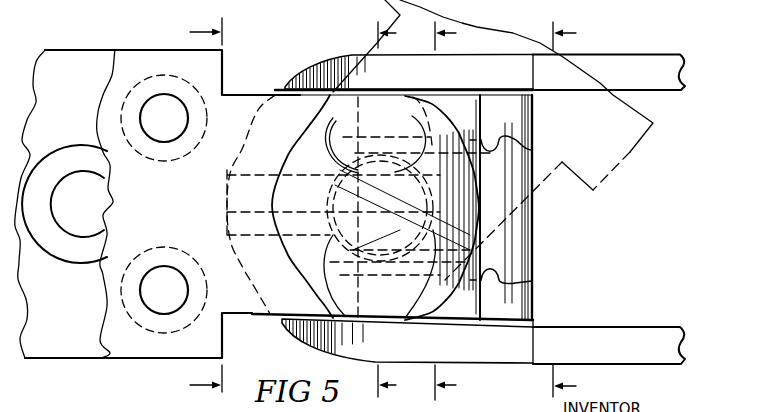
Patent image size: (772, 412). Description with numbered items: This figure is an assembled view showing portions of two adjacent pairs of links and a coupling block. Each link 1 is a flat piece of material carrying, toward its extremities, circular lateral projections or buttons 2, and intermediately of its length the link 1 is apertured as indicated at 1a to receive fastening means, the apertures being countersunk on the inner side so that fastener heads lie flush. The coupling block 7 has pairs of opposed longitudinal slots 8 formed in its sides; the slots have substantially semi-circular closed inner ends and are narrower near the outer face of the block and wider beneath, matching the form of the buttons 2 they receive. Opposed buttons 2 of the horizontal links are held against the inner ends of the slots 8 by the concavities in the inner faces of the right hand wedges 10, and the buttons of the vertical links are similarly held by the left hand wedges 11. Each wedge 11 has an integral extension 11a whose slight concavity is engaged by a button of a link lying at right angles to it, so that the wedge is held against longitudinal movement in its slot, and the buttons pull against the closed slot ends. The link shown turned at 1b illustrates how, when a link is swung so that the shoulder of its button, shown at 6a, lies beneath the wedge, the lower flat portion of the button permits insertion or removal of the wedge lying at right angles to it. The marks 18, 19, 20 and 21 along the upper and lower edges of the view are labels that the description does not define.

The link 1 is at (350, 207).
The apertures 1a is at (164, 290).
The turned link position 1b is at (493, 140).
The buttons 2 is at (336, 103).
The shoulder position 6a is at (328, 218).
The coupling block 7 is at (533, 110).
The slots 8 is at (532, 147).
The right hand wedge 10 is at (245, 193).
The left hand wedge 11 is at (476, 207).
The wedge extension 11a is at (331, 256).
The dimension 18 is at (577, 210).
The dimension 19 is at (457, 211).
The dimension 20 is at (398, 209).
The dimension 21 is at (189, 207).